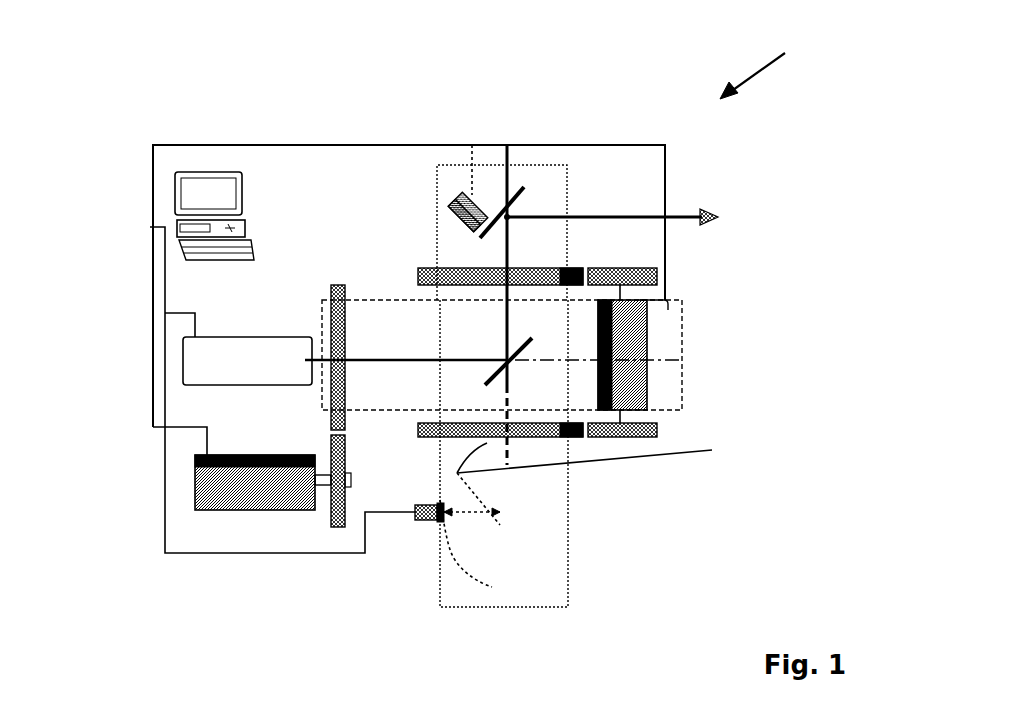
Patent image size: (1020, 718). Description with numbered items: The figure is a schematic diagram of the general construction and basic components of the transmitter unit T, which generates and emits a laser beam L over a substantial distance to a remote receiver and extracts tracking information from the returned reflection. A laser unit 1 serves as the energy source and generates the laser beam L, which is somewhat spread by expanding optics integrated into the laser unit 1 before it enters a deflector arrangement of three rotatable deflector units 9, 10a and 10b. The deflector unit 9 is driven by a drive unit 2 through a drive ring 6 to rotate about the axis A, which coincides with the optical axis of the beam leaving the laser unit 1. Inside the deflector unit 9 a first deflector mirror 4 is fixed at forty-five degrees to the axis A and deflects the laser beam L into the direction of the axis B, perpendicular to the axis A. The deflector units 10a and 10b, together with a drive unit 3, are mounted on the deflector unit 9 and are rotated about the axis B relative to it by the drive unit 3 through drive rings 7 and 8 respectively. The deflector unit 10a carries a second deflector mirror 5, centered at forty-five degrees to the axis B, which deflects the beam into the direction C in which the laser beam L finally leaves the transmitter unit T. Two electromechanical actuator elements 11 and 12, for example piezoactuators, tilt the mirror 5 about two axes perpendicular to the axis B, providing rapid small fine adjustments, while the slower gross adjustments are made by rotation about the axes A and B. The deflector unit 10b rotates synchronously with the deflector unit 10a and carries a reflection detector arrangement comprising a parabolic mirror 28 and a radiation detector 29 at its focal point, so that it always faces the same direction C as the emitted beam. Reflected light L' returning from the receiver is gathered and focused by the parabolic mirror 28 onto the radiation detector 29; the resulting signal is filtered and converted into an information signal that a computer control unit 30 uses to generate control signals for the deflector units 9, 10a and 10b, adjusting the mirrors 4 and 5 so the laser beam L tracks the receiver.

The laser unit 1 is at (200, 348).
The drive unit 2 is at (207, 453).
The drive unit 3 is at (647, 363).
The first deflector mirror 4 is at (503, 375).
The second deflector mirror 5 is at (524, 187).
The drive ring 6 is at (340, 285).
The drive ring 7 is at (620, 265).
The drive ring 8 is at (630, 437).
The deflector unit 9 is at (682, 330).
The deflector unit 10a is at (565, 180).
The deflector unit 10b is at (568, 552).
The electromechanical actuator element 11 is at (462, 200).
The electromechanical actuator element 12 is at (470, 193).
The parabolic mirror 28 is at (443, 553).
The radiation detector 29 is at (412, 520).
The computer control unit 30 is at (218, 213).
The axis A is at (695, 358).
The axis B is at (507, 213).
The direction C is at (627, 217).
The laser beam L is at (627, 182).
The reflected beam L' is at (604, 445).
The transmitter unit T is at (766, 76).